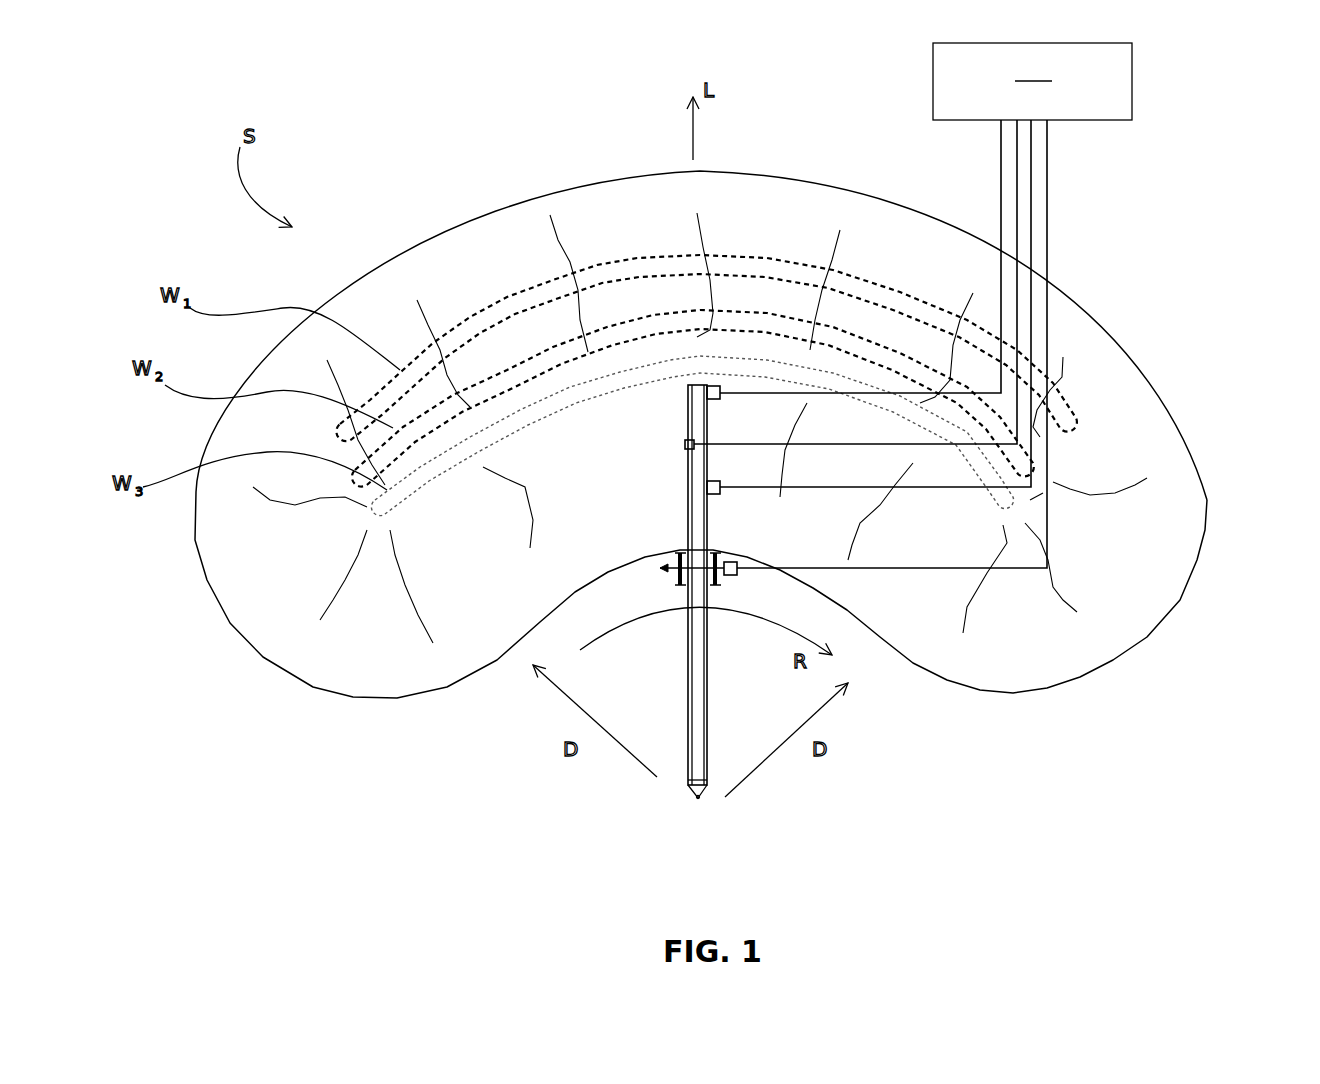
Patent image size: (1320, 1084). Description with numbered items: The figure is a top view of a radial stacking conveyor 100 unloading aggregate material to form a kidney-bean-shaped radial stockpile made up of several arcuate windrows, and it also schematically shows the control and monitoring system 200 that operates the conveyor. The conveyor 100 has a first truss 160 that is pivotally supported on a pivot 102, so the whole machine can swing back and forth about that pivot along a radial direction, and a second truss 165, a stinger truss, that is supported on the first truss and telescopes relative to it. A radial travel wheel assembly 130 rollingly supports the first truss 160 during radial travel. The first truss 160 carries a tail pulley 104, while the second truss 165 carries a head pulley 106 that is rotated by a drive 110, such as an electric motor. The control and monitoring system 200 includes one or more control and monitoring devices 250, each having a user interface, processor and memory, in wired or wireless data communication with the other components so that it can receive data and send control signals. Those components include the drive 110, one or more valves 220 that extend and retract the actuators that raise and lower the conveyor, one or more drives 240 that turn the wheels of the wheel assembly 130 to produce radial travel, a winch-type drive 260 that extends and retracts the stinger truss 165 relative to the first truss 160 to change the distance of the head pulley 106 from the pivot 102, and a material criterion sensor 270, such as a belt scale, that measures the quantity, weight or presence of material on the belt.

The radial stacking conveyor 100 is at (423, 801).
The pivot 102 is at (704, 800).
The tail pulley 104 is at (692, 789).
The head pulley 106 is at (688, 391).
The drive 110 is at (715, 386).
The radial travel wheel assembly 130 is at (660, 579).
The first truss 160 is at (688, 707).
The second truss 165 is at (687, 454).
The control and monitoring system 200 is at (1192, 176).
The valve 220 is at (732, 556).
The drive 240 is at (692, 569).
The control and monitoring device 250 is at (1032, 81).
The drive 260 is at (710, 500).
The material criterion sensor 270 is at (685, 445).